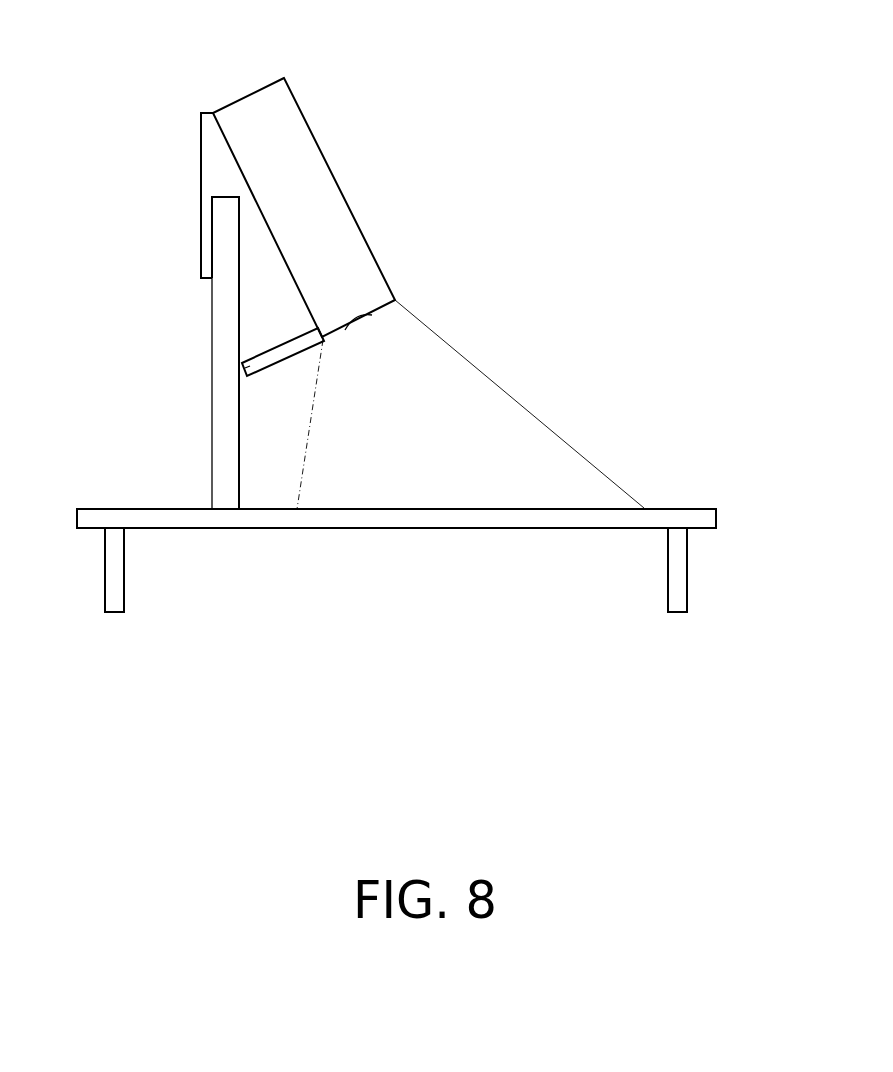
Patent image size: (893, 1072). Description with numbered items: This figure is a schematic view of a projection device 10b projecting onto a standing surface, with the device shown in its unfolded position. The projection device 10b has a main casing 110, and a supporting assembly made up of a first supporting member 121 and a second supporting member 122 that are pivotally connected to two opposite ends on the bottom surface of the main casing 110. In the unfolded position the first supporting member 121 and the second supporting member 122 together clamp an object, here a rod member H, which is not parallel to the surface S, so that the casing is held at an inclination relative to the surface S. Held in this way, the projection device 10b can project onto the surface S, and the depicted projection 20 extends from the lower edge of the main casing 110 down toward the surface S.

The projection device 10b is at (292, 205).
The main casing 110 is at (307, 150).
The second supporting member 122 is at (210, 195).
The first supporting member 121 is at (243, 369).
The rod member H is at (218, 316).
The projection unit 20 is at (363, 317).
The surface S is at (673, 508).